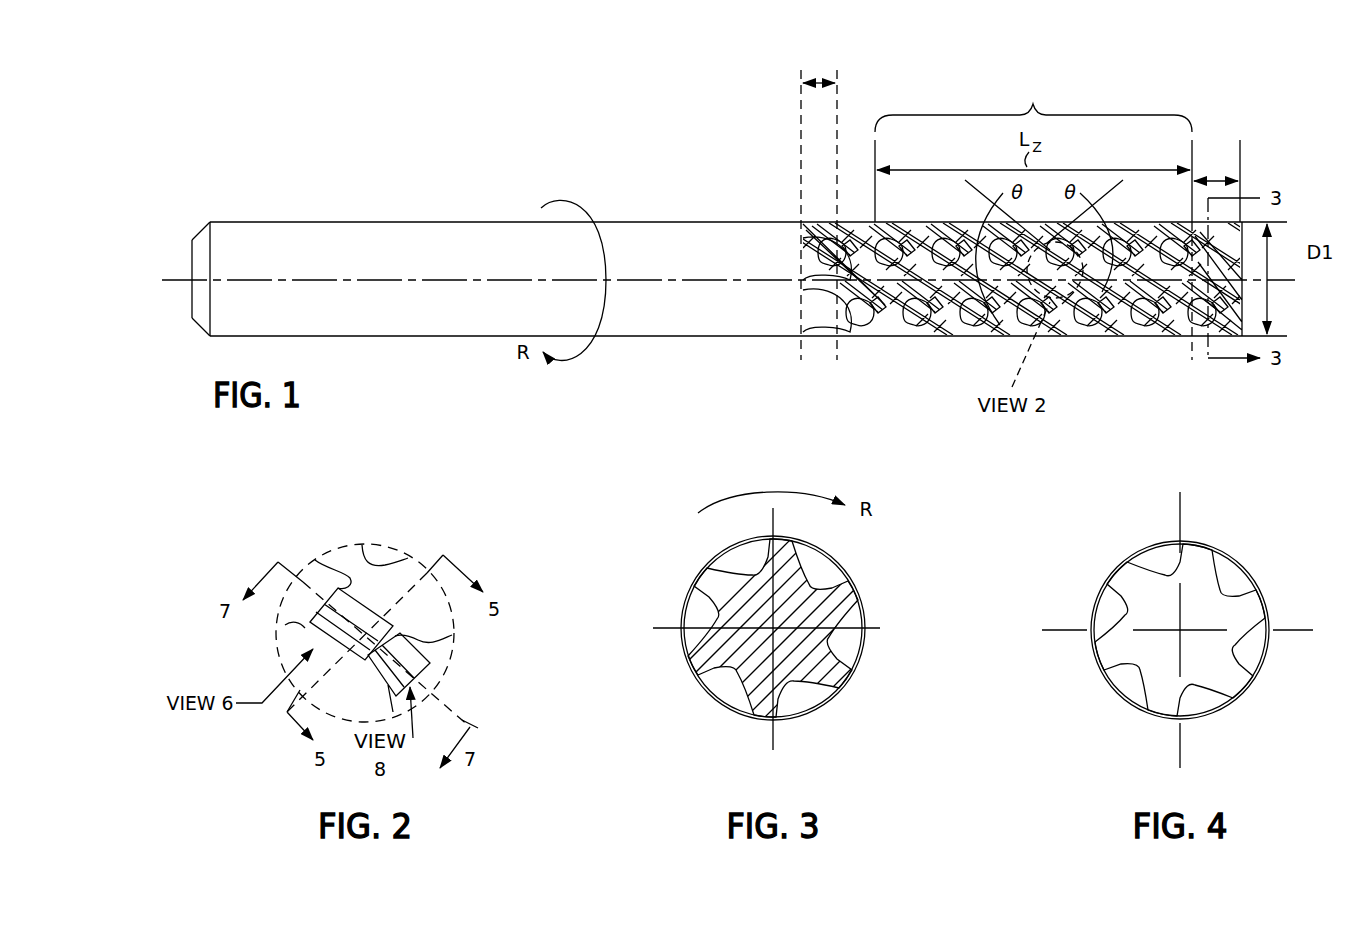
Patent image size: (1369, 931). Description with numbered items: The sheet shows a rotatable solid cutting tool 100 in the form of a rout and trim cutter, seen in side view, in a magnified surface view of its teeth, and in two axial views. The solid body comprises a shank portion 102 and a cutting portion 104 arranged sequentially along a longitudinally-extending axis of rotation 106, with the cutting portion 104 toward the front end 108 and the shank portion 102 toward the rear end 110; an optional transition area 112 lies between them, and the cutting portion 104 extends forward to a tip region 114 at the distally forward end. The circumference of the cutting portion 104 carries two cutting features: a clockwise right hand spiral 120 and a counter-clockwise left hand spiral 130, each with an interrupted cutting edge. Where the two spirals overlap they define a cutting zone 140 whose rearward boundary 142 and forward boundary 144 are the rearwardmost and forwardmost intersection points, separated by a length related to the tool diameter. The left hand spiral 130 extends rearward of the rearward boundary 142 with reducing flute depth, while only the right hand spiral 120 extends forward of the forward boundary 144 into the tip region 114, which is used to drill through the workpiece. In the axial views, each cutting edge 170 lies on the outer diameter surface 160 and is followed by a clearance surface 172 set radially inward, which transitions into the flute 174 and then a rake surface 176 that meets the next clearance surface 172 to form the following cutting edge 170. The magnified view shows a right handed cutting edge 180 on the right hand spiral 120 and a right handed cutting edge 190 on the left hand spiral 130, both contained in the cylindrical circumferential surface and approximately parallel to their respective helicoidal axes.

In FIG. 1, the cutting tool 100 is at (470, 183).
In FIG. 1, the shank portion 102 is at (801, 83).
In FIG. 1, the cutting portion 104 is at (837, 83).
In FIG. 1, the axis of rotation 106 is at (176, 277).
In FIG. 1, the front end 108 is at (1278, 300).
In FIG. 1, the rear end 110 is at (190, 306).
In FIG. 1, the transition area 112 is at (820, 83).
In FIG. 1, the tip region 114 is at (1217, 180).
In FIG. 1, the right hand spiral 120 is at (1147, 332).
In FIG. 3, the right hand spiral 120 is at (688, 590).
In FIG. 1, the left hand spiral 130 is at (903, 335).
In FIG. 1, the cutting zone 140 is at (1033, 126).
In FIG. 1, the rearward boundary 142 is at (875, 154).
In FIG. 1, the forward boundary 144 is at (1192, 154).
In FIG. 3, the outer diameter surface 160 is at (833, 700).
In FIG. 4, the outer diameter surface 160 is at (1100, 590).
In FIG. 3, the cutting edge 170 is at (692, 582).
In FIG. 4, the cutting edge 170 is at (1107, 578).
In FIG. 3, the clearance surface 172 is at (690, 613).
In FIG. 4, the clearance surface 172 is at (1122, 565).
In FIG. 3, the flute 174 is at (695, 645).
In FIG. 4, the flute 174 is at (1157, 557).
In FIG. 3, the rake surface 176 is at (690, 668).
In FIG. 4, the rake surface 176 is at (1168, 540).
In FIG. 2, the right handed cutting edge on right hand spiral 180 is at (285, 625).
In FIG. 2, the right handed cutting edge on left hand spiral 190 is at (452, 635).